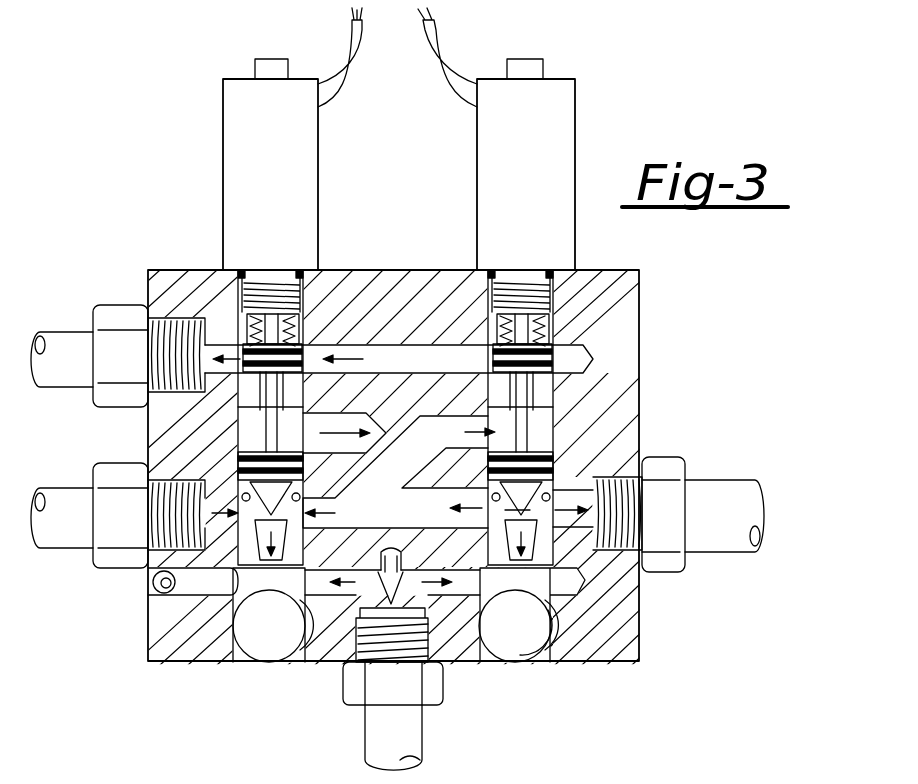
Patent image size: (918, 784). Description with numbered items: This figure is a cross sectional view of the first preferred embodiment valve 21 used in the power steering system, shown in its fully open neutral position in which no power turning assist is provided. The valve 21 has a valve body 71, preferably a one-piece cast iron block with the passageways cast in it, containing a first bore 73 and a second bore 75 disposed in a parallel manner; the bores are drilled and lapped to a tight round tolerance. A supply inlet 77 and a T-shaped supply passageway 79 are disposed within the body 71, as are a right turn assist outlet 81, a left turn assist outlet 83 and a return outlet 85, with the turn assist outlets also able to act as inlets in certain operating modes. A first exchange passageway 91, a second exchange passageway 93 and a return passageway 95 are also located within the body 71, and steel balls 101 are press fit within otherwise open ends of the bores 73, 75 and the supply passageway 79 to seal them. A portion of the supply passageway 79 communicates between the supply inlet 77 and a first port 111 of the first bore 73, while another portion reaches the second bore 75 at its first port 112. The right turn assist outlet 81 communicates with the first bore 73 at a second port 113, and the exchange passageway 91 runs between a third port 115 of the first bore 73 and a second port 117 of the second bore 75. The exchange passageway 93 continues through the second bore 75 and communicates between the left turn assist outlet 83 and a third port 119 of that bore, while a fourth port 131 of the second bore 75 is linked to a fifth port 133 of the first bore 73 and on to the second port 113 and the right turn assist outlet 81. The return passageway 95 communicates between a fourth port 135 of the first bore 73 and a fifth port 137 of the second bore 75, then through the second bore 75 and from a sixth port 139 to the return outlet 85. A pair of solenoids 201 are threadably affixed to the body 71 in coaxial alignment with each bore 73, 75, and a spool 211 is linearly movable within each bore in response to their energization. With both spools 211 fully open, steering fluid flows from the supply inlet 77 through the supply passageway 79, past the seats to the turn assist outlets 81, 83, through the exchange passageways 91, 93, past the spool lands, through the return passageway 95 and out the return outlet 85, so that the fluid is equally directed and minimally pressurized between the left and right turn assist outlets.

The valve 21 is at (652, 128).
The valve body 71 is at (372, 290).
The first bore 73 is at (543, 667).
The second bore 75 is at (300, 662).
The supply inlet 77 is at (400, 665).
The supply passageway 79 is at (445, 600).
The right turn assist outlet 81 is at (655, 487).
The left turn assist outlet 83 is at (147, 458).
The return outlet 85 is at (175, 318).
The first exchange passageway 91 is at (462, 345).
The second exchange passageway 93 is at (345, 600).
The return passageway 95 is at (325, 345).
The steel balls 101 is at (152, 582).
The first port 111 is at (545, 603).
The first port 112 is at (270, 615).
The second port 113 is at (595, 480).
The third port 115 is at (540, 425).
The second port 117 is at (175, 528).
The third port 119 is at (240, 433).
The fourth port 131 is at (399, 358).
The fifth port 133 is at (416, 470).
The fourth port 135 is at (487, 275).
The fifth port 137 is at (300, 310).
The sixth port 139 is at (243, 345).
The solenoids 201 is at (288, 123).
The spool 211 is at (148, 378).